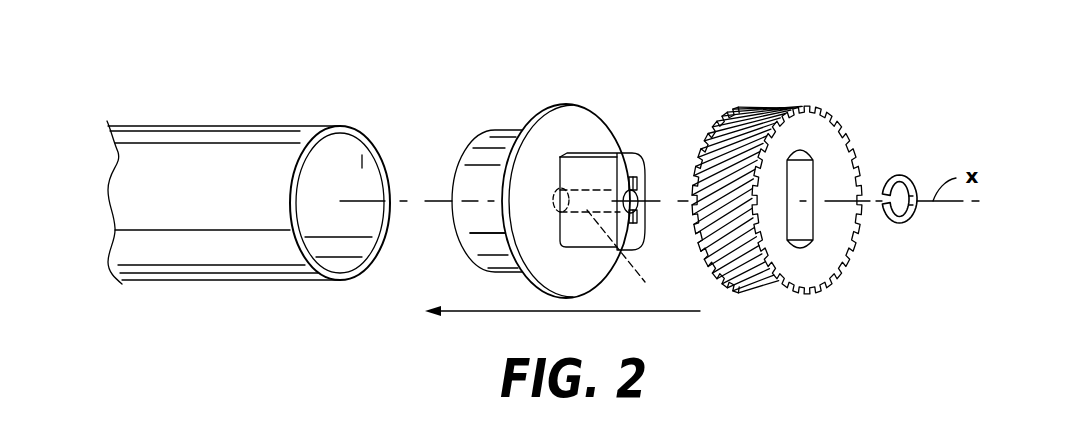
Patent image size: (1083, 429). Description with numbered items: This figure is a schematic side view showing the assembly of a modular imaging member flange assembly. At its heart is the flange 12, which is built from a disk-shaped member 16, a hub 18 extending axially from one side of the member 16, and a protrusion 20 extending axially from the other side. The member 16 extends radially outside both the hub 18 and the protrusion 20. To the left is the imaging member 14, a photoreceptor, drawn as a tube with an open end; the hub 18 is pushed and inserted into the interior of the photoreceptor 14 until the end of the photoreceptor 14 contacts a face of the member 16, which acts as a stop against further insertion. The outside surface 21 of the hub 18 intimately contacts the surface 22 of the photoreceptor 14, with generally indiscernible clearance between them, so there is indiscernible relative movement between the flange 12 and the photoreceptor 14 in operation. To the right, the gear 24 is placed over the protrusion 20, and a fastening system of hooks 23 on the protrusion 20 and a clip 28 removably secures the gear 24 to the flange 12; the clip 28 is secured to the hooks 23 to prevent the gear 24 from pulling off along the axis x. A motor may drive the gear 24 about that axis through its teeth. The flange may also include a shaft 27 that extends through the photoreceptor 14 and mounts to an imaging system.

The flange 12 is at (550, 50).
The imaging member 14 is at (208, 135).
The member 16 is at (577, 124).
The hub 18 is at (498, 120).
The protrusion 20 is at (630, 158).
The outside surface 21 is at (474, 220).
The surface 22 is at (367, 166).
The hooks 23 is at (640, 216).
The gear 24 is at (843, 160).
The shaft 27 is at (635, 256).
The clip 28 is at (889, 225).